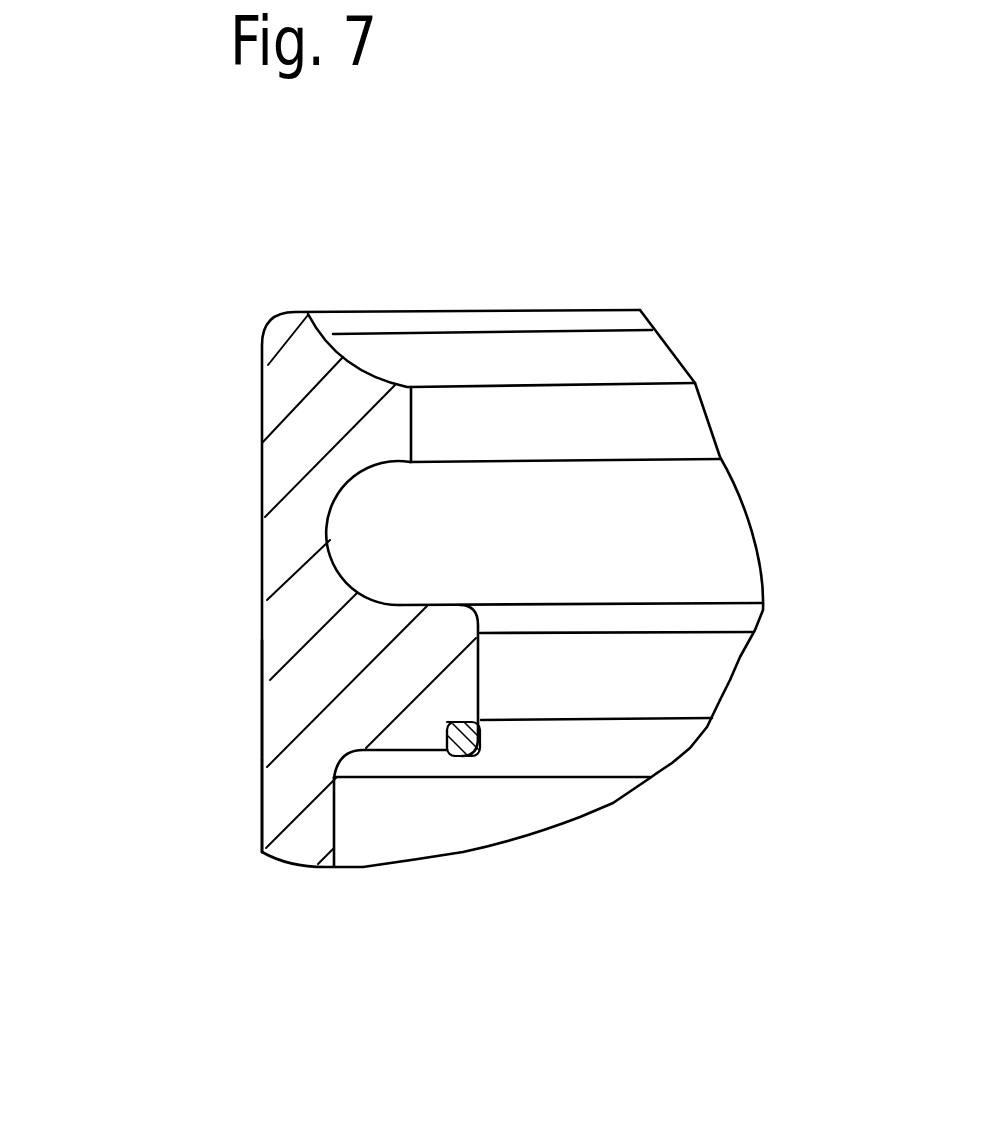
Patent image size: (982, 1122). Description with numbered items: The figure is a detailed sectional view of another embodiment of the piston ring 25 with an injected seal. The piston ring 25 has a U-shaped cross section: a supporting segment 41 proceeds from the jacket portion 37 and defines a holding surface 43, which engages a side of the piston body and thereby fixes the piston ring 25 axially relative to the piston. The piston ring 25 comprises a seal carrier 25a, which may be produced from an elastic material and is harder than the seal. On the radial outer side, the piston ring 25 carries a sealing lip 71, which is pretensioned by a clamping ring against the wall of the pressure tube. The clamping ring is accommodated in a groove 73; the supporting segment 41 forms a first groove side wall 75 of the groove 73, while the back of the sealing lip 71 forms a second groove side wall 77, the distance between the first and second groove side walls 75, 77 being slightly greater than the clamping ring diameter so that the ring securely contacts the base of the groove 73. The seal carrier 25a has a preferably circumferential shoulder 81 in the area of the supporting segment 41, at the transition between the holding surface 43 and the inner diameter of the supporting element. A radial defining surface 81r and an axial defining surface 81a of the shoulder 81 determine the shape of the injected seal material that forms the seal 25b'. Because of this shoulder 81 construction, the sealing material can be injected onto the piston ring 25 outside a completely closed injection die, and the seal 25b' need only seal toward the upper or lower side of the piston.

The piston ring 25 is at (185, 780).
The seal carrier 25a is at (283, 708).
The seal 25b' is at (511, 833).
The jacket portion 37 is at (340, 820).
The supporting segment 41 is at (445, 697).
The holding surface 43 is at (401, 765).
The sealing lip 71 is at (300, 365).
The groove 73 is at (383, 555).
The first groove side wall 75 is at (436, 590).
The second groove side wall 77 is at (390, 474).
The shoulder 81 is at (440, 733).
The axial defining surface 81a is at (430, 720).
The radial defining surface 81r is at (447, 730).